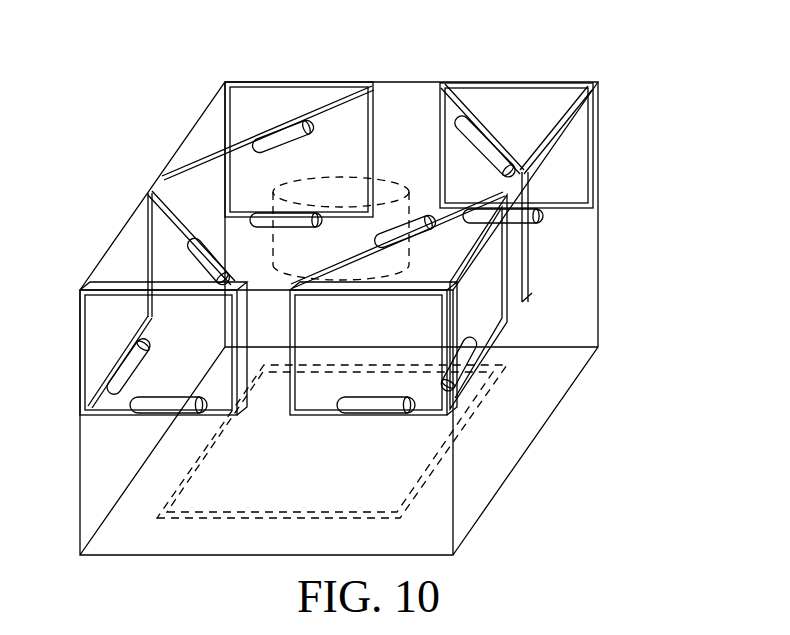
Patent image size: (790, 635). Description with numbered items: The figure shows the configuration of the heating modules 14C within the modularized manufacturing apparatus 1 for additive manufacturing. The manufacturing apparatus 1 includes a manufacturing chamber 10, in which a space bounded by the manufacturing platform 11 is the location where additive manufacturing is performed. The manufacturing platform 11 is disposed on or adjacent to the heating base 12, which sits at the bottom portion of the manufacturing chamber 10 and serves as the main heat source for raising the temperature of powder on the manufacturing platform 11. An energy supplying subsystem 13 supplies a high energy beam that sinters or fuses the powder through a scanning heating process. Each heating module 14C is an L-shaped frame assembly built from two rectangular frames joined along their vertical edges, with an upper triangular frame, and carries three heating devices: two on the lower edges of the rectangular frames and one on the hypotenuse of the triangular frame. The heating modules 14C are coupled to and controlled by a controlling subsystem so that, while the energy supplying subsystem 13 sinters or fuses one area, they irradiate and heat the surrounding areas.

The manufacturing apparatus 1 is at (77, 40).
The manufacturing chamber 10 is at (556, 408).
The manufacturing platform 11 is at (442, 449).
The heating base 12 is at (475, 414).
The energy supplying subsystem 13 is at (395, 177).
The heating module 14C is at (217, 132).